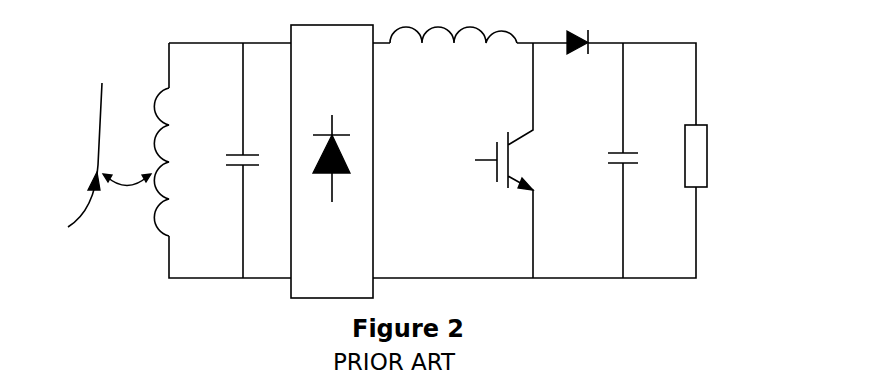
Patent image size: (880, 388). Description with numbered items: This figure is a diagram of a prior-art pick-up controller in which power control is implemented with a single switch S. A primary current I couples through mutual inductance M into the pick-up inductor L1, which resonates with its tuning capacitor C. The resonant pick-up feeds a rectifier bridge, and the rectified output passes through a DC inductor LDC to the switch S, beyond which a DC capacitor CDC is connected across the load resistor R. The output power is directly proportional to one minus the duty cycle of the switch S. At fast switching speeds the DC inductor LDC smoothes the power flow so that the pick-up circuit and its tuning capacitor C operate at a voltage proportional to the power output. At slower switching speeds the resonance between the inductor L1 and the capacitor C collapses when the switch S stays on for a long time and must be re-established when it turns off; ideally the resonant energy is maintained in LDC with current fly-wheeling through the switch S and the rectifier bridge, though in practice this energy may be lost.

The primary track current I is at (85, 155).
The mutual inductance coupling M is at (127, 169).
The inductor L1 is at (176, 162).
The tuning capacitor C is at (254, 160).
The DC inductor LDC is at (453, 55).
The switch S is at (504, 160).
The DC capacitor CDC is at (601, 160).
The load resistor R is at (708, 156).